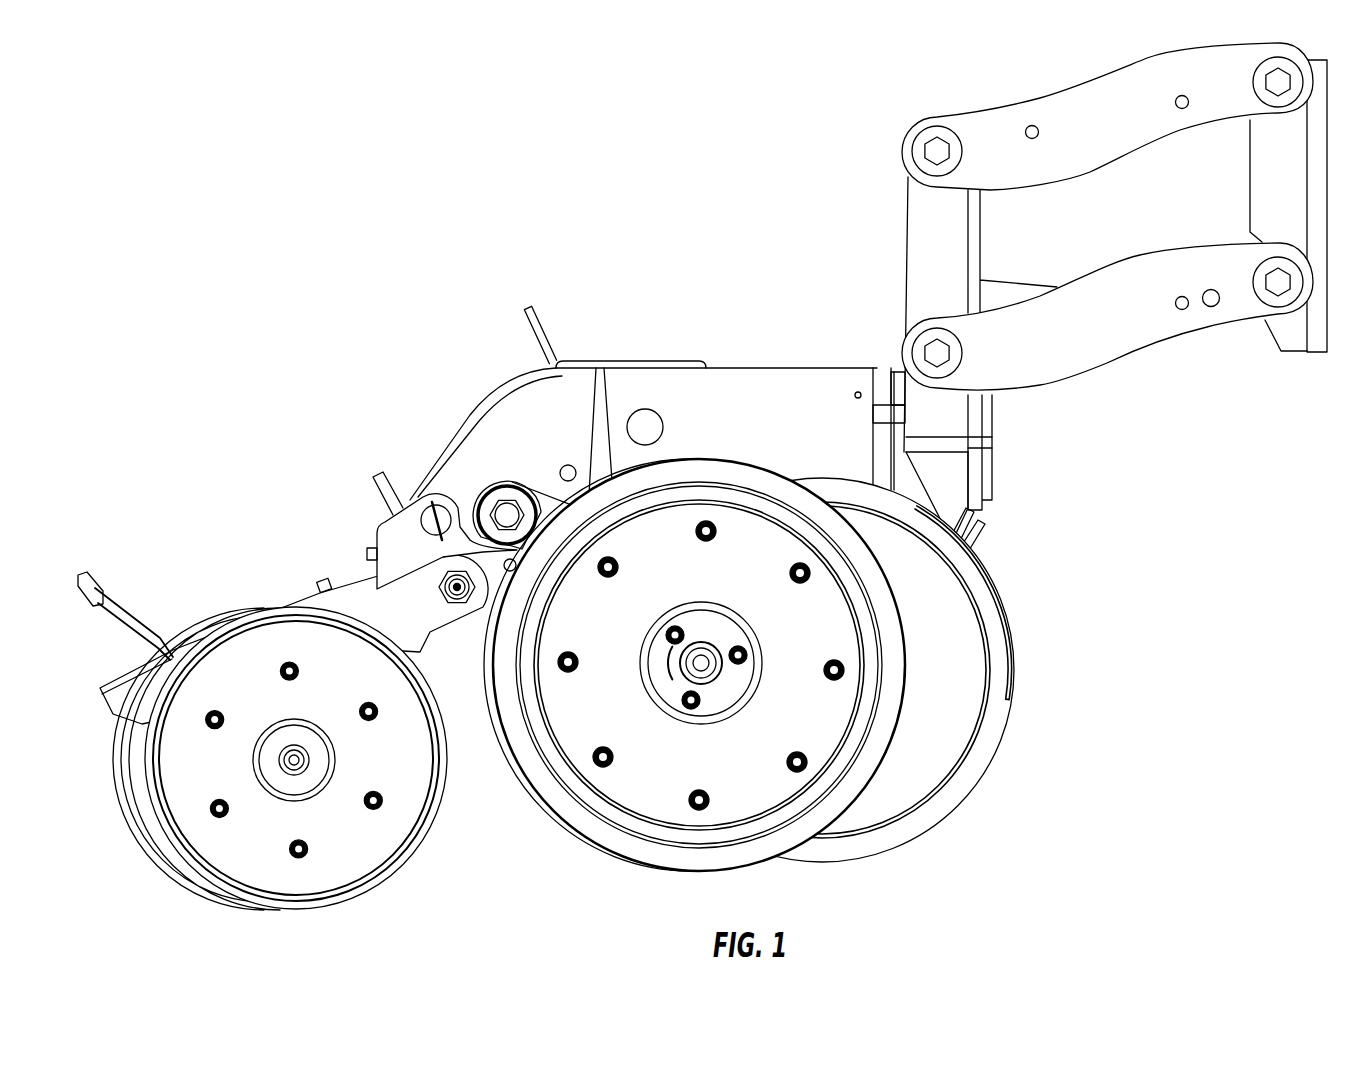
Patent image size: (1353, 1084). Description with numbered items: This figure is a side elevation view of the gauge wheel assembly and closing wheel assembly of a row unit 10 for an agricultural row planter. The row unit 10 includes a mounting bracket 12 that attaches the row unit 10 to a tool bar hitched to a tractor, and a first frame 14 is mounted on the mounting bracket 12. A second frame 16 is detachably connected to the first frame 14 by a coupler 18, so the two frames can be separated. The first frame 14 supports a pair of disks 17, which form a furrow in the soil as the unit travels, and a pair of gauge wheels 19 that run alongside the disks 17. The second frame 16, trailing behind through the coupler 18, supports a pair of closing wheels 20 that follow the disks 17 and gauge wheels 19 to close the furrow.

The row unit 10 is at (1047, 507).
The mounting bracket 12 is at (866, 229).
The first frame 14 is at (734, 345).
The second frame 16 is at (318, 592).
The disks 17 is at (913, 828).
The coupler 18 is at (378, 527).
The gauge wheels 19 is at (563, 834).
The closing wheels 20 is at (370, 878).